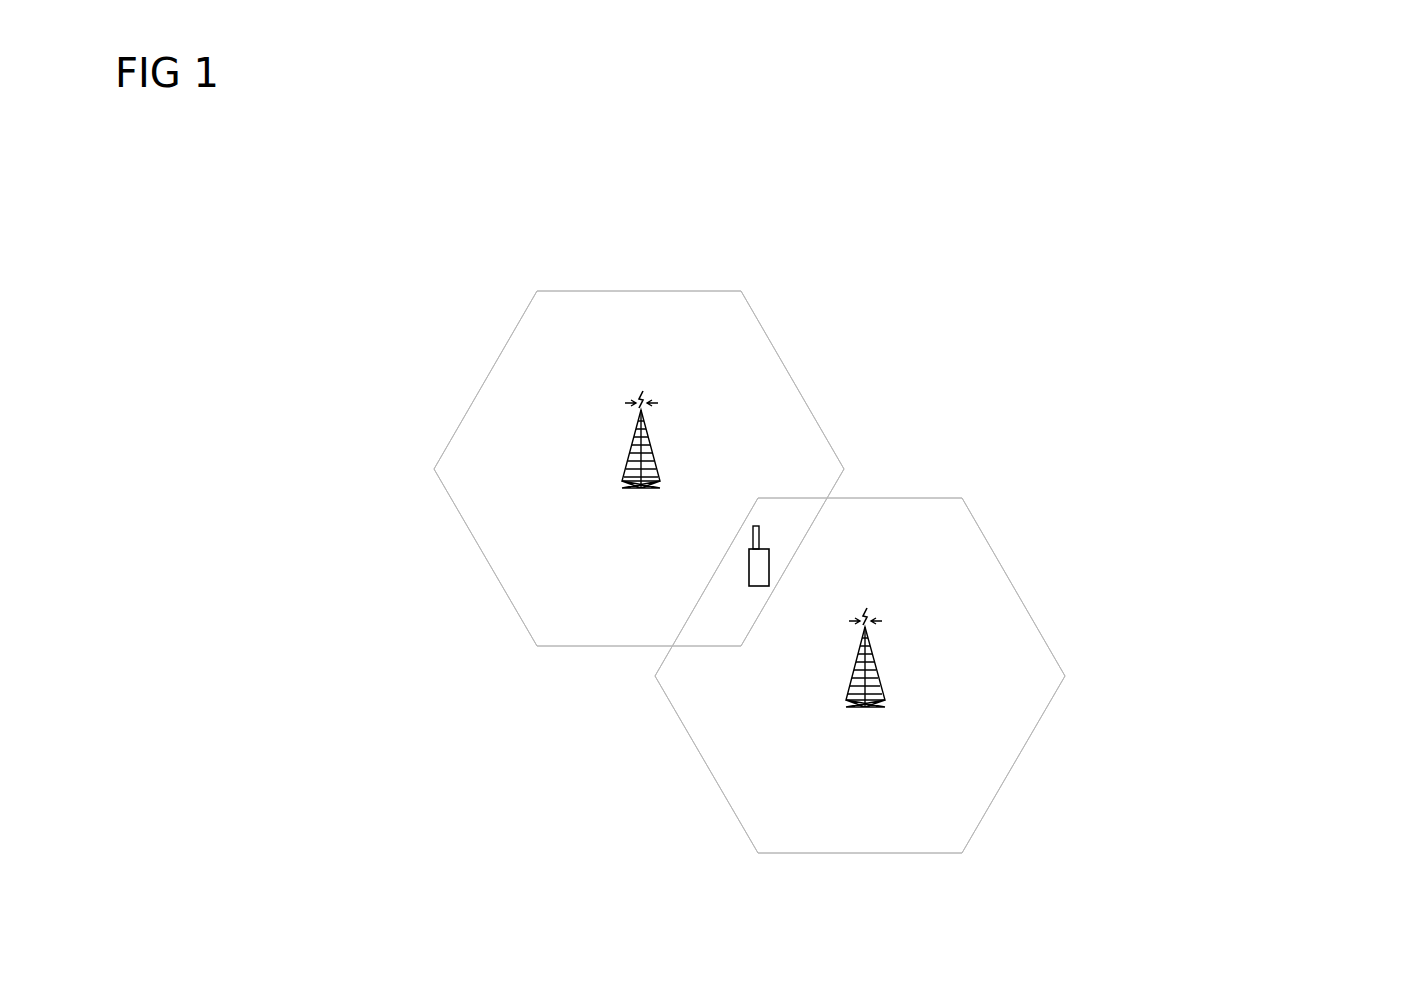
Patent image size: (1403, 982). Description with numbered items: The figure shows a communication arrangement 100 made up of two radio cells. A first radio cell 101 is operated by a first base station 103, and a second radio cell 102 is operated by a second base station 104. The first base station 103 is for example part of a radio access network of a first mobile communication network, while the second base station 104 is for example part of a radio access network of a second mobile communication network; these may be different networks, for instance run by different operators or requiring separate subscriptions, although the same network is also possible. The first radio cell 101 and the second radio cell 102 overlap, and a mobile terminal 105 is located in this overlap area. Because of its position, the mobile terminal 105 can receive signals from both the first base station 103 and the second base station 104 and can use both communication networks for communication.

The communication arrangement 100 is at (1296, 145).
The first radio cell 101 is at (761, 329).
The second radio cell 102 is at (948, 498).
The first base station 103 is at (651, 446).
The second base station 104 is at (874, 665).
The mobile terminal 105 is at (770, 560).